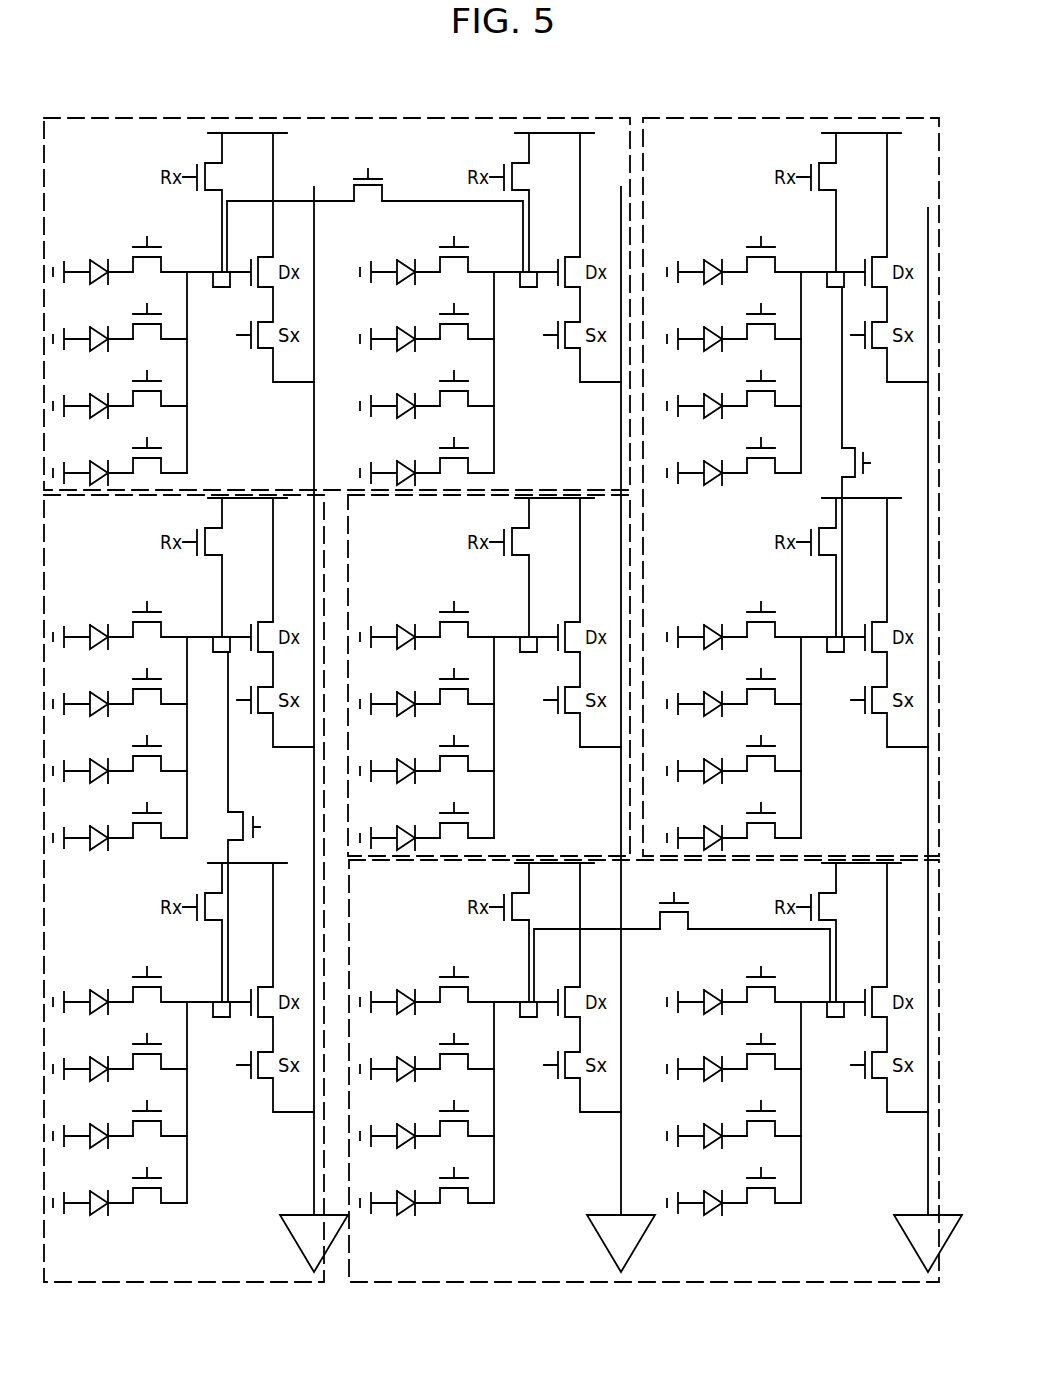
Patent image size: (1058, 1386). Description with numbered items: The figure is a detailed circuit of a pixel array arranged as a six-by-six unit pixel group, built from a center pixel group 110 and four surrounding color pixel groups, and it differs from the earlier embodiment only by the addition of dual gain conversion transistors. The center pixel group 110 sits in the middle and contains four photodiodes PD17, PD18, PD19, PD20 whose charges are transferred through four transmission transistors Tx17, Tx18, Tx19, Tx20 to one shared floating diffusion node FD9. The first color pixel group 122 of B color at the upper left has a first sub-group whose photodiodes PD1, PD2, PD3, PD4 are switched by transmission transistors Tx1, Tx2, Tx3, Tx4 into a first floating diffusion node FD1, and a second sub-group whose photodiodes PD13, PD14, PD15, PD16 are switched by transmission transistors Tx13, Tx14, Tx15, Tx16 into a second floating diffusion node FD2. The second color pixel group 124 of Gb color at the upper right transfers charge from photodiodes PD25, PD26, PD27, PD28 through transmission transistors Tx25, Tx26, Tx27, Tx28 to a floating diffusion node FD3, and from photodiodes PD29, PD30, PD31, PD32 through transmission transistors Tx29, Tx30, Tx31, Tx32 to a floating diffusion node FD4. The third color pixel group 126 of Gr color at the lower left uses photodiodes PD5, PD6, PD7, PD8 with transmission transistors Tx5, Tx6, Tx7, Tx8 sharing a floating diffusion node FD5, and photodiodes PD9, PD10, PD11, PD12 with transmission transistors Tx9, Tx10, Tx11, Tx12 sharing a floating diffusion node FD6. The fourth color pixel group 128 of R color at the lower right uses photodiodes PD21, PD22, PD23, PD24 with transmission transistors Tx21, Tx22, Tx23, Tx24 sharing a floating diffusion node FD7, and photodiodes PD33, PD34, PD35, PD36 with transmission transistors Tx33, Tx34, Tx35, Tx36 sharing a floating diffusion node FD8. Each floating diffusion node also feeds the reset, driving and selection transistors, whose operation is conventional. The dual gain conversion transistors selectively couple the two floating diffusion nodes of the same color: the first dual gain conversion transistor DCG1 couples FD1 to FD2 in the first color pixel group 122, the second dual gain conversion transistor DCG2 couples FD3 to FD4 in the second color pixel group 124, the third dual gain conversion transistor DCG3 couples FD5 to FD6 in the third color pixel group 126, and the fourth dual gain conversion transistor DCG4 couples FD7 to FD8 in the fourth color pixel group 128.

The center pixel group 110 is at (348, 558).
The first color pixel group 122 is at (346, 118).
The second color pixel group 124 is at (789, 118).
The third color pixel group 126 is at (192, 1283).
The fourth color pixel group 128 is at (655, 1283).
The first photodiode PD1 is at (93, 257).
The first photodiode PD2 is at (93, 324).
The first photodiode PD3 is at (93, 391).
The first photodiode PD4 is at (93, 458).
The first photodiode PD5 is at (93, 622).
The first photodiode PD6 is at (93, 689).
The first photodiode PD7 is at (93, 756).
The first photodiode PD8 is at (93, 823).
The second photodiode PD9 is at (93, 987).
The second photodiode PD10 is at (93, 1054).
The second photodiode PD11 is at (93, 1121).
The second photodiode PD12 is at (93, 1188).
The second photodiode PD13 is at (400, 257).
The second photodiode PD14 is at (400, 324).
The second photodiode PD15 is at (400, 391).
The second photodiode PD16 is at (400, 458).
The photodiode PD17 is at (400, 622).
The photodiode PD18 is at (400, 689).
The photodiode PD19 is at (400, 756).
The photodiode PD20 is at (400, 823).
The first photodiode PD21 is at (400, 987).
The first photodiode PD22 is at (400, 1054).
The first photodiode PD23 is at (400, 1121).
The first photodiode PD24 is at (400, 1188).
The first photodiode PD25 is at (707, 257).
The first photodiode PD26 is at (707, 324).
The first photodiode PD27 is at (707, 391).
The first photodiode PD28 is at (707, 458).
The second photodiode PD29 is at (707, 622).
The second photodiode PD30 is at (707, 689).
The second photodiode PD31 is at (707, 756).
The second photodiode PD32 is at (707, 823).
The second photodiode PD33 is at (707, 987).
The second photodiode PD34 is at (707, 1054).
The second photodiode PD35 is at (707, 1121).
The second photodiode PD36 is at (707, 1188).
The transmission transistor Tx1 is at (159, 241).
The transmission transistor Tx2 is at (159, 308).
The transmission transistor Tx3 is at (159, 375).
The transmission transistor Tx4 is at (159, 442).
The transmission transistor Tx5 is at (159, 606).
The transmission transistor Tx6 is at (159, 673).
The transmission transistor Tx7 is at (159, 740).
The transmission transistor Tx8 is at (159, 807).
The transmission transistor Tx9 is at (159, 971).
The transmission transistor Tx10 is at (156, 1038).
The transmission transistor Tx11 is at (156, 1105).
The transmission transistor Tx12 is at (156, 1172).
The transmission transistor Tx13 is at (463, 241).
The transmission transistor Tx14 is at (463, 308).
The transmission transistor Tx15 is at (463, 375).
The transmission transistor Tx16 is at (463, 442).
The transmission transistor Tx17 is at (463, 606).
The transmission transistor Tx18 is at (463, 673).
The transmission transistor Tx19 is at (463, 740).
The transmission transistor Tx20 is at (463, 807).
The transmission transistor Tx21 is at (463, 971).
The transmission transistor Tx22 is at (463, 1038).
The transmission transistor Tx23 is at (463, 1105).
The transmission transistor Tx24 is at (463, 1172).
The transmission transistor Tx25 is at (770, 241).
The transmission transistor Tx26 is at (770, 308).
The transmission transistor Tx27 is at (770, 375).
The transmission transistor Tx28 is at (770, 442).
The transmission transistor Tx29 is at (770, 606).
The transmission transistor Tx30 is at (770, 673).
The transmission transistor Tx31 is at (770, 740).
The transmission transistor Tx32 is at (770, 807).
The transmission transistor Tx33 is at (770, 971).
The transmission transistor Tx34 is at (770, 1038).
The transmission transistor Tx35 is at (770, 1105).
The transmission transistor Tx36 is at (770, 1172).
The first floating diffusion node FD1 is at (221, 293).
The second floating diffusion node FD2 is at (528, 293).
The third floating diffusion node FD3 is at (825, 293).
The fourth floating diffusion node FD4 is at (835, 658).
The fifth floating diffusion node FD5 is at (211, 658).
The sixth floating diffusion node FD6 is at (221, 1023).
The seventh floating diffusion node FD7 is at (528, 1023).
The eighth floating diffusion node FD8 is at (835, 1023).
The floating diffusion node FD9 is at (528, 658).
The first dual gain conversion transistor DCG1 is at (368, 169).
The second dual gain conversion transistor DCG2 is at (881, 473).
The third dual gain conversion transistor DCG3 is at (269, 837).
The fourth dual gain conversion transistor DCG4 is at (674, 897).